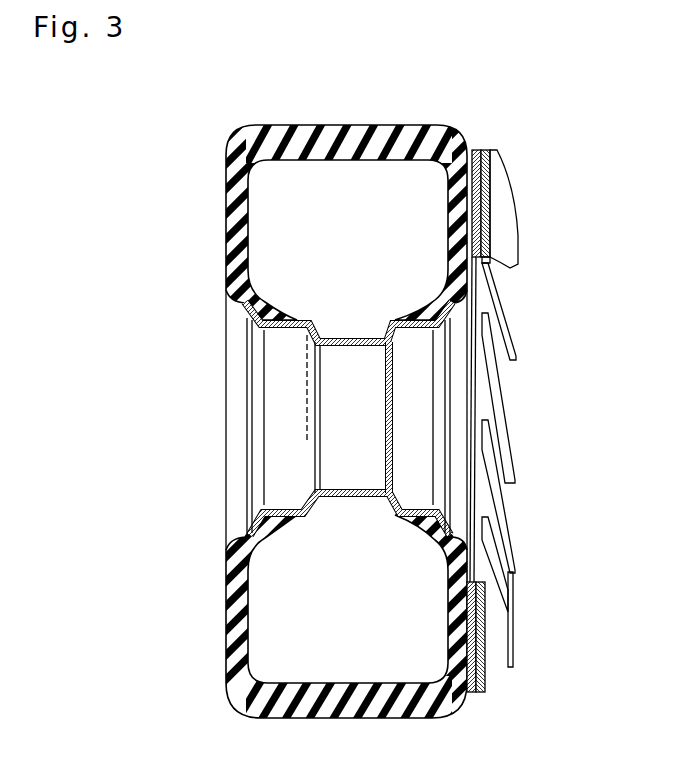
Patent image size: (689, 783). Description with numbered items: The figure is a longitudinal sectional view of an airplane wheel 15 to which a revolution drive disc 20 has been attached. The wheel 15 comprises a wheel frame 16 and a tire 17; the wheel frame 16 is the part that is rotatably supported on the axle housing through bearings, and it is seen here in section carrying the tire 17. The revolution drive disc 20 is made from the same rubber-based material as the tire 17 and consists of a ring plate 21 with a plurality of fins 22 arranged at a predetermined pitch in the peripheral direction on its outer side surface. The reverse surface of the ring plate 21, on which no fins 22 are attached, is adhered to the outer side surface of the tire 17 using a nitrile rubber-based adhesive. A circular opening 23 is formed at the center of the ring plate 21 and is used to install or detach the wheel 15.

The wheel 15 is at (517, 97).
The wheel frame 16 is at (297, 330).
The tire 17 is at (410, 137).
The revolution drive disc 20 is at (555, 257).
The ring plate 21 is at (490, 212).
The fins 22 is at (507, 192).
The circular opening 23 is at (485, 273).